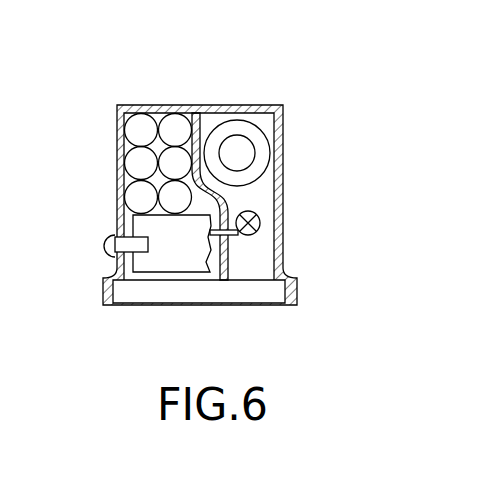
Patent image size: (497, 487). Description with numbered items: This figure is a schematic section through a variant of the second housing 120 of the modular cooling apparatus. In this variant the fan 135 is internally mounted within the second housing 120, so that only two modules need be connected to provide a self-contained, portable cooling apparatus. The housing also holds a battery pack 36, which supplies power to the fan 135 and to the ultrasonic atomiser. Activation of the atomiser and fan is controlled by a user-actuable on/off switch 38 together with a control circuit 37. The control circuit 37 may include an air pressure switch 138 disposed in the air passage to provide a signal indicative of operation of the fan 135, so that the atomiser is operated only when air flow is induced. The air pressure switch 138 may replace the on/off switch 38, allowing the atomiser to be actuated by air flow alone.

The second housing 120 is at (300, 192).
The battery pack 36 is at (142, 125).
The fan 135 is at (237, 147).
The control circuit 37 is at (173, 250).
The on/off switch 38 is at (113, 237).
The air pressure switch 138 is at (258, 215).